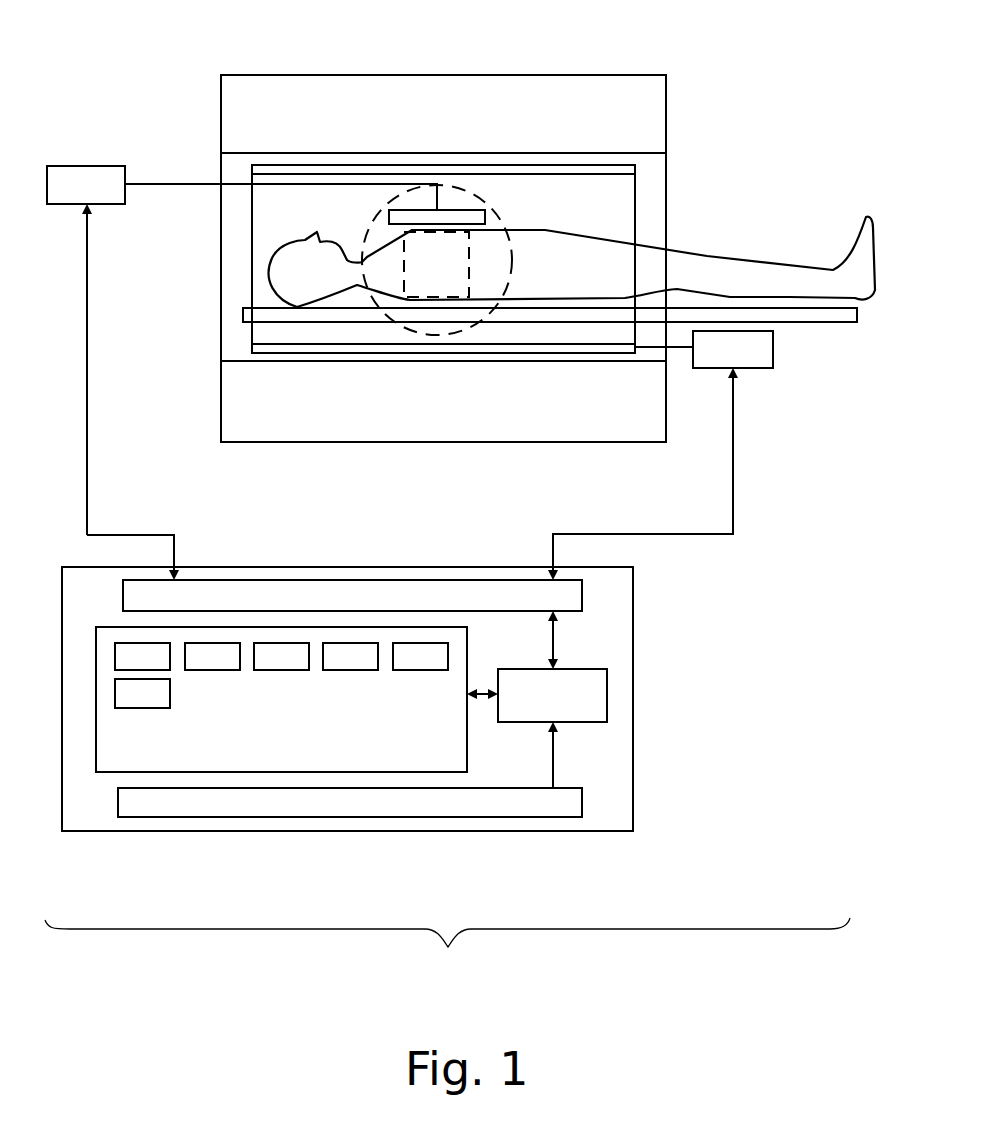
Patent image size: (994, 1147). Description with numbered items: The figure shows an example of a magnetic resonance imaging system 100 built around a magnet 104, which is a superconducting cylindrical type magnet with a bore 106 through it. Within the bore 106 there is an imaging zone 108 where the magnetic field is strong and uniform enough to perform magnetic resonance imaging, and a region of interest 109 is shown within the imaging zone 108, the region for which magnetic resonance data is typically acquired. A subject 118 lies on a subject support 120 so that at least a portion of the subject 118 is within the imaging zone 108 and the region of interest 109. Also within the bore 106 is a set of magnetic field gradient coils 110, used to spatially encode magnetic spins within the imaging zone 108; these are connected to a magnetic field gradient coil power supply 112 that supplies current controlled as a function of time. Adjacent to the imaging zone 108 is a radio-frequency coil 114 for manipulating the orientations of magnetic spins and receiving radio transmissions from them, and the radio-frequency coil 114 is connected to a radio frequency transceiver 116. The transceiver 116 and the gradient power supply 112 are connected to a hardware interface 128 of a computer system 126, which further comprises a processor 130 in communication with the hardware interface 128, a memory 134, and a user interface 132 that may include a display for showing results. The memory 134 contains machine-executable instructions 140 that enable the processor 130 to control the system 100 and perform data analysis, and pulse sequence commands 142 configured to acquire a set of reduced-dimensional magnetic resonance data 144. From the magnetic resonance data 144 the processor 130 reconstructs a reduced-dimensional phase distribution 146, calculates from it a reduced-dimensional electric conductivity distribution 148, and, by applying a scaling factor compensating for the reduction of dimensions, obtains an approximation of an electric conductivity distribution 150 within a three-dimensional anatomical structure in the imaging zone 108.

The magnetic resonance imaging system 100 is at (447, 949).
The magnet 104 is at (666, 105).
The bore 106 is at (587, 203).
The imaging zone 108 is at (430, 336).
The region of interest 109 is at (470, 268).
The magnetic field gradient coils 110 is at (262, 165).
The magnetic field gradient coil power supply 112 is at (660, 455).
The radio-frequency coil 114 is at (453, 210).
The radio frequency transceiver 116 is at (242, 373).
The subject 118 is at (873, 275).
The subject support 120 is at (825, 322).
The computer system 126 is at (633, 617).
The hardware interface 128 is at (352, 597).
The processor 130 is at (537, 699).
The user interface 132 is at (350, 804).
The memory 134 is at (88, 717).
The machine-executable instructions 140 is at (142, 658).
The pulse sequence commands 142 is at (212, 658).
The (3-n)-dimensional magnetic resonance data 144 is at (281, 658).
The (3-n)-dimensional phase distribution 146 is at (350, 658).
The (3-n)-dimensional electric conductivity distribution 148 is at (420, 658).
The electric conductivity distribution 150 is at (142, 694).